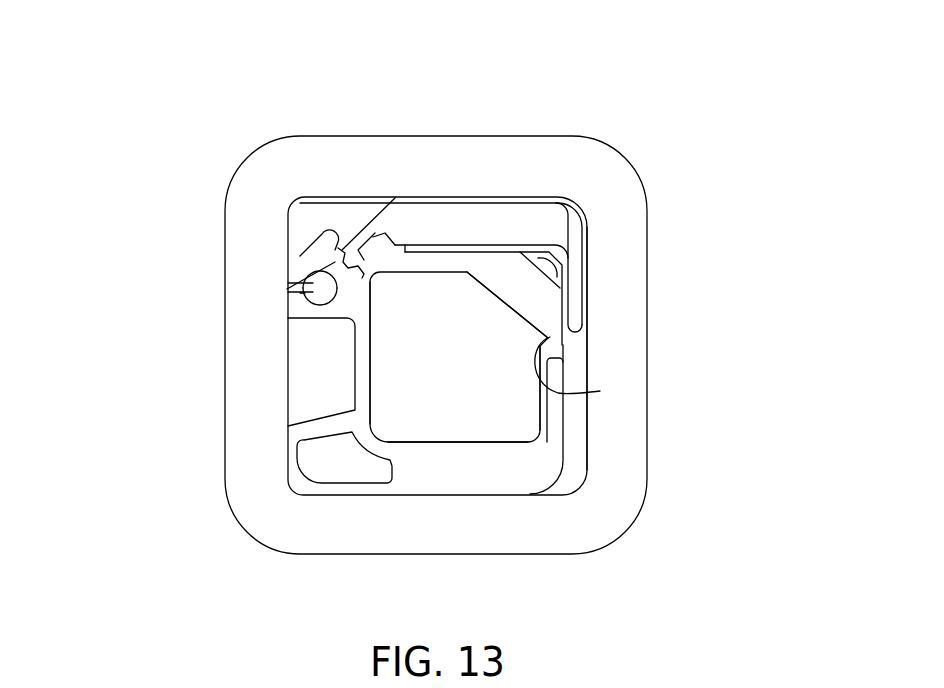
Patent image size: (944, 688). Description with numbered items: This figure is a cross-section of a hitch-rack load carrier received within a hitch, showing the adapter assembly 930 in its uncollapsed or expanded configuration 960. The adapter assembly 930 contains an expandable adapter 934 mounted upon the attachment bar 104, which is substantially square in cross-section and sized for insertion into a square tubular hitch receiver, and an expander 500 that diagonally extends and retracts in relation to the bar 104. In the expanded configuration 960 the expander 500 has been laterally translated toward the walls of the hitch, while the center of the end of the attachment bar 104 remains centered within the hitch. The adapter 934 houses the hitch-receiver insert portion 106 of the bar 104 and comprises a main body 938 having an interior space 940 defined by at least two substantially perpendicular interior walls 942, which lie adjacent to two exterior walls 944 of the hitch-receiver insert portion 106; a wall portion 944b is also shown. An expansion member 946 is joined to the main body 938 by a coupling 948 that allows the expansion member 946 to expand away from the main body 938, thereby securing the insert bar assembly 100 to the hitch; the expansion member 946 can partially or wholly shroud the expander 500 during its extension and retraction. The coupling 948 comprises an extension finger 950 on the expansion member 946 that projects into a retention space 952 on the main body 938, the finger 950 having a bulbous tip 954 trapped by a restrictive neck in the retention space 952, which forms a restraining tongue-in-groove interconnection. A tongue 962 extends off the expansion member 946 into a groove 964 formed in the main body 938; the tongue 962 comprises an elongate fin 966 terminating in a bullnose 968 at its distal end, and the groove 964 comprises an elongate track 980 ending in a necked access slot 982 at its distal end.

The expanded configuration 960 is at (681, 91).
The exterior walls 944 is at (530, 197).
The interior walls 942 is at (587, 226).
The housing arm 944b is at (587, 285).
The expansion member 946 is at (478, 207).
The expandable adapter 934 is at (433, 217).
The expander 500 is at (600, 391).
The tongue 962 is at (383, 278).
The elongate fin 966 is at (365, 238).
The interior space 940 is at (400, 220).
The main body 938 is at (405, 262).
The extension finger 950 is at (345, 225).
The elongate track 980 is at (350, 232).
The bulbous tip 954 is at (342, 260).
The groove 964 is at (313, 283).
The coupling 948 is at (313, 292).
The necked access slot 982 is at (305, 293).
The retention space 952 is at (322, 302).
The bullnose 968 is at (352, 285).
The insert bar assembly 100 is at (405, 483).
The hitch-receiver insert portion 106 is at (482, 475).
The attachment bar 104 is at (507, 435).
The adapter assembly 930 is at (587, 247).